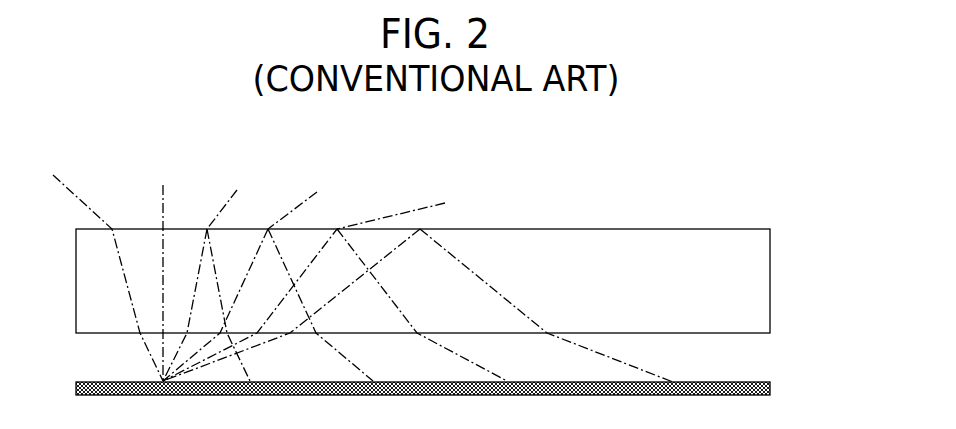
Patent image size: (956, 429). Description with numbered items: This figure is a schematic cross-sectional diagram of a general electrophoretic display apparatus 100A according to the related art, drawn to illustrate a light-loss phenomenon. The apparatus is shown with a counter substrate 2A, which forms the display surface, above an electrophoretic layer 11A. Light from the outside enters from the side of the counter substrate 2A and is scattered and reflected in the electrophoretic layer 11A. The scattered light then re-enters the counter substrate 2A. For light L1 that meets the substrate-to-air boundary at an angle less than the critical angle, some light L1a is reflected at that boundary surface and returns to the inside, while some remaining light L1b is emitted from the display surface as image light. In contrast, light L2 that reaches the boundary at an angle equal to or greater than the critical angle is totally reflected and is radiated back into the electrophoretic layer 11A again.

The electrophoretic display apparatus 100A is at (458, 246).
The counter substrate 2A is at (752, 287).
The electrophoretic layer 11A is at (765, 383).
The light L1 is at (163, 252).
The some light L1a is at (217, 266).
The some remaining light L1b is at (227, 204).
The light L2 is at (392, 251).